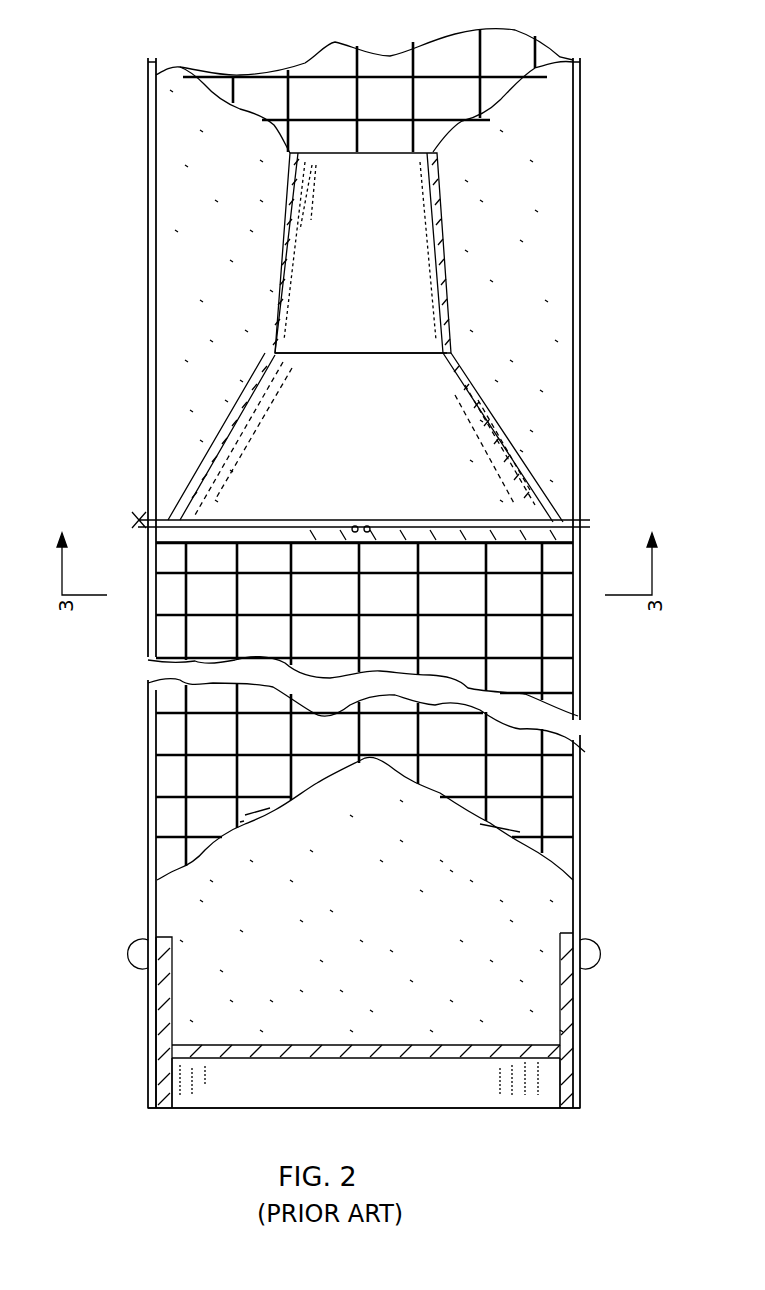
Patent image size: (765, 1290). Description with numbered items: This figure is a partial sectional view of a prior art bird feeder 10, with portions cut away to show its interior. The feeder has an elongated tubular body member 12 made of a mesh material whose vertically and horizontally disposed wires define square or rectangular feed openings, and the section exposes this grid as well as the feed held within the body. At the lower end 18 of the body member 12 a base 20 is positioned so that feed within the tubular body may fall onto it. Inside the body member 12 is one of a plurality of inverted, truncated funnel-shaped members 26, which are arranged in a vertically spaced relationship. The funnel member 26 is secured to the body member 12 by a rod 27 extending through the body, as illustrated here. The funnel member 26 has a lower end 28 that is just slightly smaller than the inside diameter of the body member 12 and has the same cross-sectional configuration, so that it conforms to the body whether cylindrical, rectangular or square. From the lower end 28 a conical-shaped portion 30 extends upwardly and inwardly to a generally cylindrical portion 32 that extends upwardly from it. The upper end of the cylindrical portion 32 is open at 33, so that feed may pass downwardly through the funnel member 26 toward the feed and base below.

The bird feeder 10 is at (123, 240).
The body member 12 is at (582, 268).
The lower end 18 is at (178, 1075).
The base 20 is at (583, 1108).
The funnel member 26 is at (510, 408).
The rod 27 is at (420, 520).
The lower end 28 is at (390, 511).
The conical-shaped portion 30 is at (525, 458).
The cylindrical portion 32 is at (443, 218).
The open upper end 33 is at (378, 150).